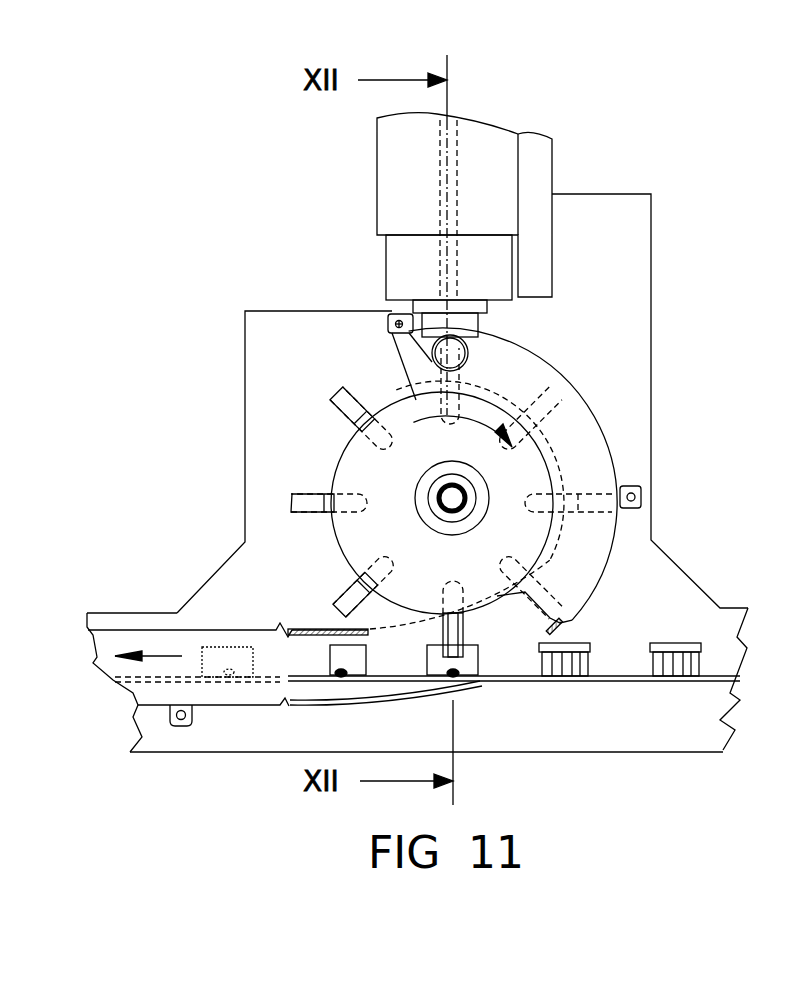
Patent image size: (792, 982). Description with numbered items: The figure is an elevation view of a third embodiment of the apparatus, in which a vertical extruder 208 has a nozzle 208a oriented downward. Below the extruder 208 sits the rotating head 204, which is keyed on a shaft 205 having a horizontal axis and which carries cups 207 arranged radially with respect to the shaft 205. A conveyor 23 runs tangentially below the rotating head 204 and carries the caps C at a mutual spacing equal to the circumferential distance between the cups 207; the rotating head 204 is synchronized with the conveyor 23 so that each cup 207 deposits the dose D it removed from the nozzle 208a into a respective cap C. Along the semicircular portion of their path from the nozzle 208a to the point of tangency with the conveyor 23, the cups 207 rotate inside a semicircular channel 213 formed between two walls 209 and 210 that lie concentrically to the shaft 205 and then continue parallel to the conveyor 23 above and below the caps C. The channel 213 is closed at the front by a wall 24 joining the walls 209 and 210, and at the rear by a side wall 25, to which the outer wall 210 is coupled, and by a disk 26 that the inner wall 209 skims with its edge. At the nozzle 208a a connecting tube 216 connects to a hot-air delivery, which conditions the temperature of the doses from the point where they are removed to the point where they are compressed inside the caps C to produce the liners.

The vertical extruder 208 is at (400, 148).
The nozzle 208a is at (472, 321).
The connecting tube 216 is at (433, 362).
The side wall 25 is at (272, 328).
The rotating head 204 is at (325, 444).
The shaft 205 is at (448, 498).
The cups 207 is at (336, 394).
The wall 24 is at (583, 418).
The disk 26 is at (532, 521).
The semicircular channel 213 is at (632, 440).
The inner wall 209 is at (165, 631).
The outer wall 210 is at (251, 706).
The conveyor 23 is at (598, 690).
The dose D is at (340, 670).
The caps C is at (558, 643).